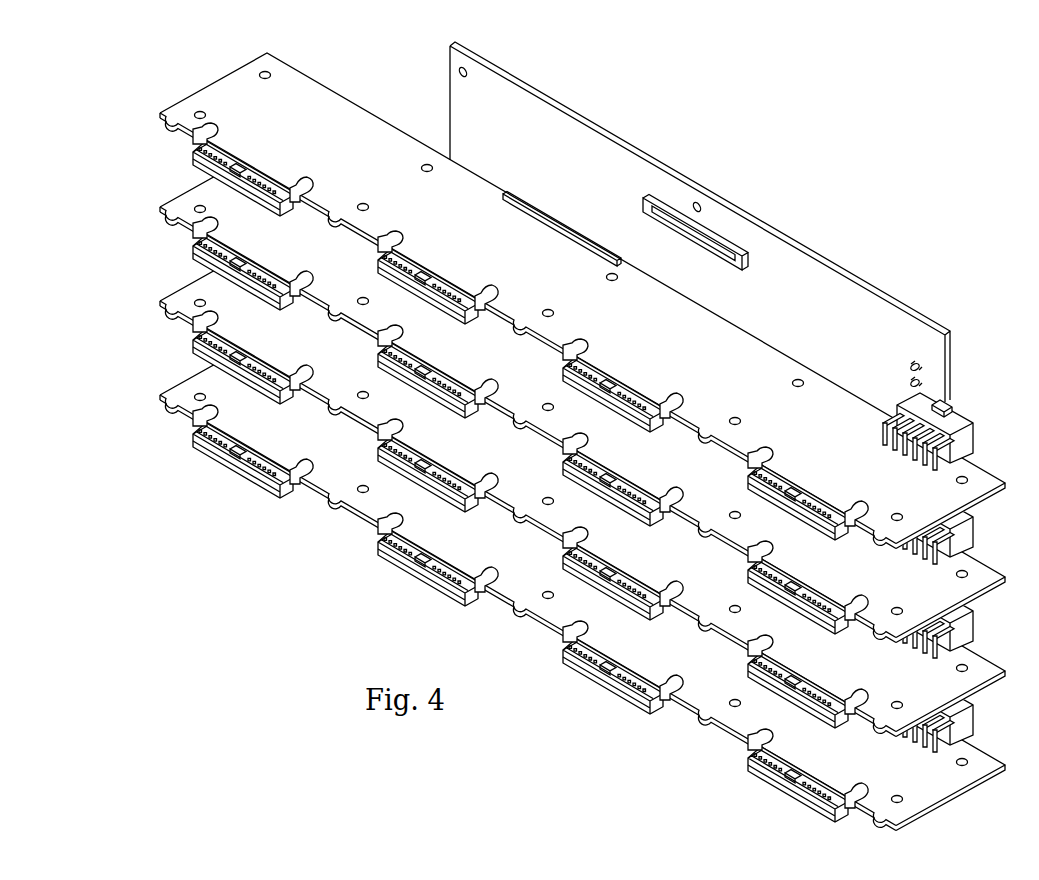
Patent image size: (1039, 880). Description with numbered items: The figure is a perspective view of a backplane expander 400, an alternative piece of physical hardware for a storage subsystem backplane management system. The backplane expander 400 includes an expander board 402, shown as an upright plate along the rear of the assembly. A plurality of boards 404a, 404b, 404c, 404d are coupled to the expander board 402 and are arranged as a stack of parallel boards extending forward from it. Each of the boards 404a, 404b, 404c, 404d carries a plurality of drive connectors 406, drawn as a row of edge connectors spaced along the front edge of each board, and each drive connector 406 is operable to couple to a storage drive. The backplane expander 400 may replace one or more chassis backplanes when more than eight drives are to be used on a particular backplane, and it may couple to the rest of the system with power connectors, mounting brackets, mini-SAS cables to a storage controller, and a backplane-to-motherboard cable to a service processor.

The backplane expander 400 is at (568, 436).
The expander board 402 is at (797, 250).
The board 404a is at (215, 88).
The board 404b is at (170, 205).
The board 404c is at (172, 299).
The board 404d is at (172, 393).
The drive connector 406 is at (191, 157).